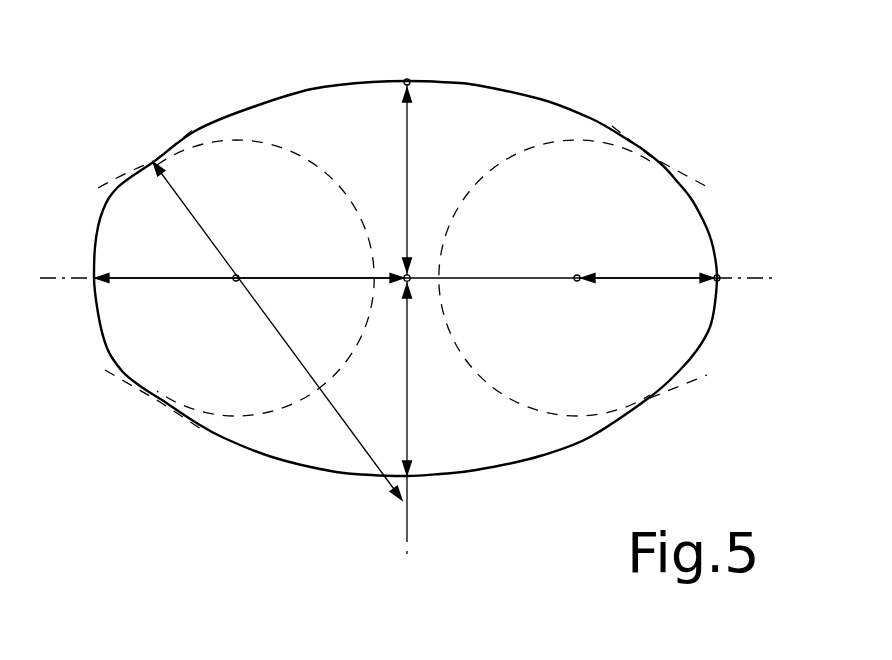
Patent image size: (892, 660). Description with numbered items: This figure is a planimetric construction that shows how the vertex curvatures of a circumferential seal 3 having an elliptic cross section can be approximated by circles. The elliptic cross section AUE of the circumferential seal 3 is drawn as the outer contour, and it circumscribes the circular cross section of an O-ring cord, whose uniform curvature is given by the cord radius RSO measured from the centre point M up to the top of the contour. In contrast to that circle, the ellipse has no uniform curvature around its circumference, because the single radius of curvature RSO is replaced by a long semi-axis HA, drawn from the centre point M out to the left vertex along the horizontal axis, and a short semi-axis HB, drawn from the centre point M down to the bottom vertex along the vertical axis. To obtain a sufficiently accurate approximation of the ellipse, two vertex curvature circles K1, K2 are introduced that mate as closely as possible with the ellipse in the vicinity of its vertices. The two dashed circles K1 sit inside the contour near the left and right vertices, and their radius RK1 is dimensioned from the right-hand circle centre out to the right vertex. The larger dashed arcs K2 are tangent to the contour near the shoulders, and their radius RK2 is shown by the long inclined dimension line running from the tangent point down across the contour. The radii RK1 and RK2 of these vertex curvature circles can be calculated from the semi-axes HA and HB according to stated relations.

The elliptic cross section AUE is at (460, 110).
The vertex curvature circle K1 is at (493, 168).
The vertex curvature circle K2 is at (658, 162).
The centre point M is at (394, 295).
The long semi-axis HA is at (170, 281).
The short semi-axis HB is at (409, 393).
The cord radius RSO is at (407, 158).
The radius of vertex curvature circle K1 RK1 is at (637, 277).
The radius of vertex curvature circle K2 RK2 is at (198, 223).
The circumferential seal 3 is at (257, 495).